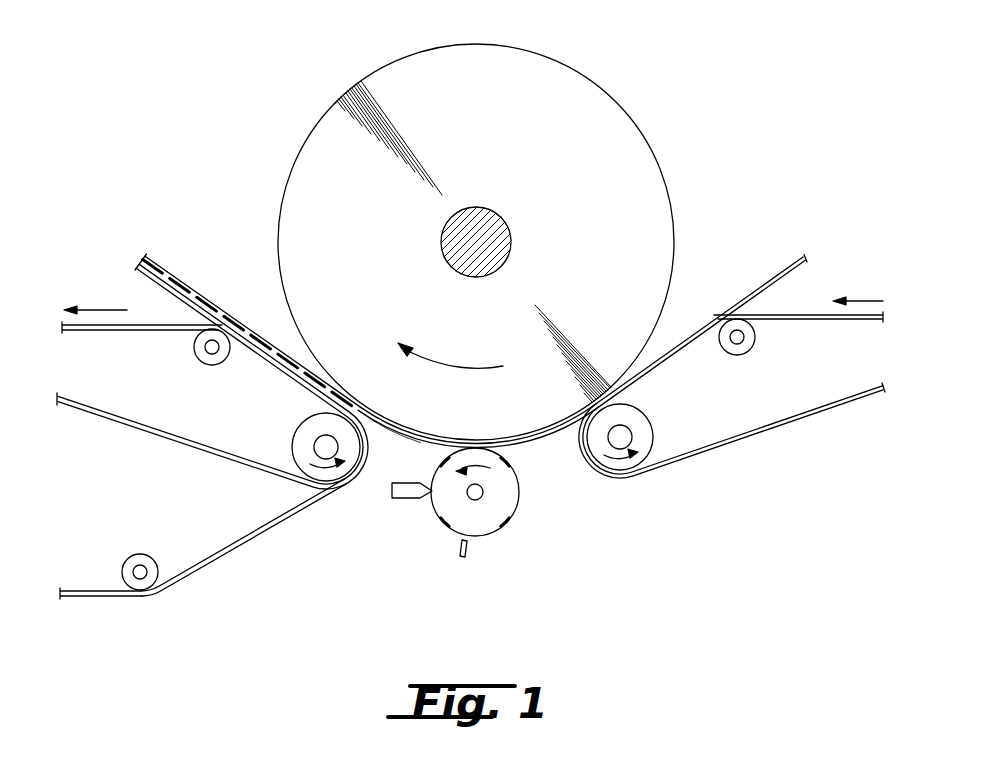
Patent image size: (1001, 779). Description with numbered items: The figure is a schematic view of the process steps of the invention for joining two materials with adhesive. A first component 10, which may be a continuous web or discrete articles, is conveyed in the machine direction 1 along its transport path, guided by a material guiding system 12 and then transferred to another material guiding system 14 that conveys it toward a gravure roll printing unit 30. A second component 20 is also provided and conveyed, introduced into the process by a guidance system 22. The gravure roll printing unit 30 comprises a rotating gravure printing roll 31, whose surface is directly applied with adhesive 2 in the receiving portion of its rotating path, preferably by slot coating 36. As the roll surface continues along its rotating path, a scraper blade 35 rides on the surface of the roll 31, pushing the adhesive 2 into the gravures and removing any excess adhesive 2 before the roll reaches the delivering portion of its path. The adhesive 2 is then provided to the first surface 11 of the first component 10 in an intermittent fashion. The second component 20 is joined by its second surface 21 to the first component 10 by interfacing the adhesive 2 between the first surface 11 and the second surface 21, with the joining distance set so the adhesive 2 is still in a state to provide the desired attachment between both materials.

The machine direction 1 is at (202, 278).
The adhesive 2 is at (417, 440).
The first component 10 is at (704, 322).
The first surface 11 is at (540, 440).
The material guiding system 12 is at (773, 435).
The material guiding system 14 is at (608, 116).
The second component 20 is at (108, 598).
The second surface 21 is at (298, 514).
The guidance system 22 is at (163, 448).
The gravure roll printing unit 30 is at (474, 531).
The rotating gravure printing roll 31 is at (506, 530).
The scraper blade 35 is at (460, 556).
The slot coating 36 is at (403, 500).